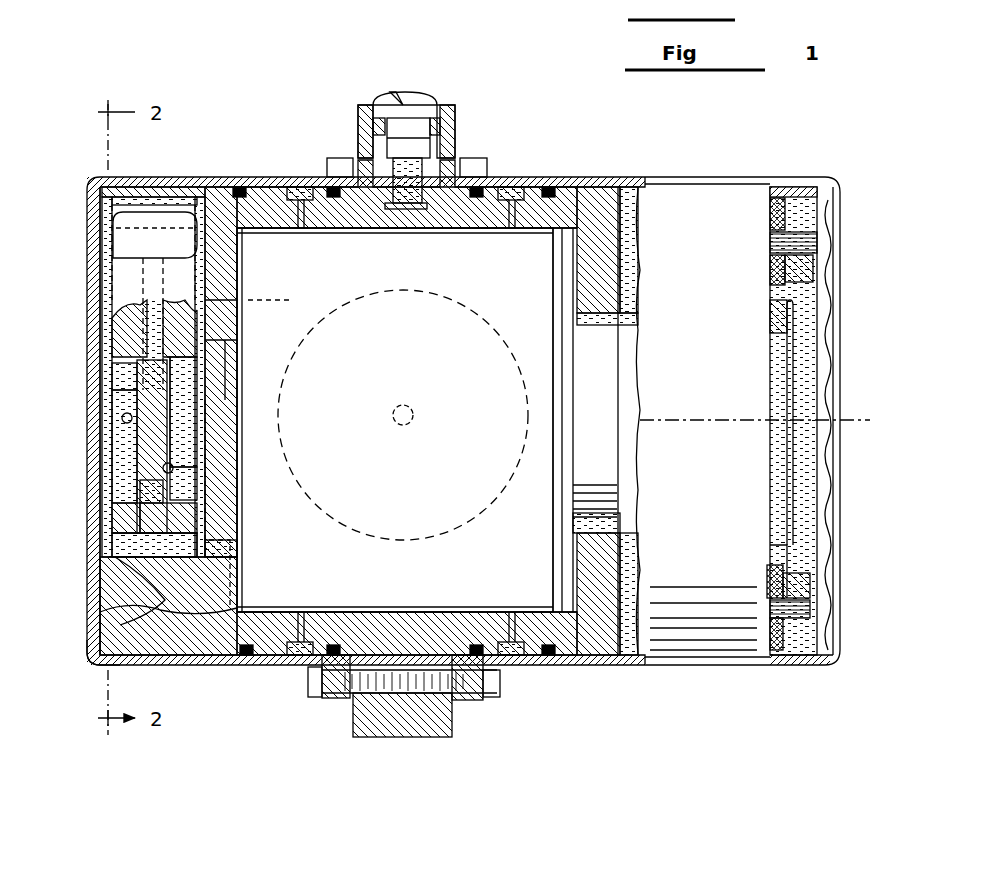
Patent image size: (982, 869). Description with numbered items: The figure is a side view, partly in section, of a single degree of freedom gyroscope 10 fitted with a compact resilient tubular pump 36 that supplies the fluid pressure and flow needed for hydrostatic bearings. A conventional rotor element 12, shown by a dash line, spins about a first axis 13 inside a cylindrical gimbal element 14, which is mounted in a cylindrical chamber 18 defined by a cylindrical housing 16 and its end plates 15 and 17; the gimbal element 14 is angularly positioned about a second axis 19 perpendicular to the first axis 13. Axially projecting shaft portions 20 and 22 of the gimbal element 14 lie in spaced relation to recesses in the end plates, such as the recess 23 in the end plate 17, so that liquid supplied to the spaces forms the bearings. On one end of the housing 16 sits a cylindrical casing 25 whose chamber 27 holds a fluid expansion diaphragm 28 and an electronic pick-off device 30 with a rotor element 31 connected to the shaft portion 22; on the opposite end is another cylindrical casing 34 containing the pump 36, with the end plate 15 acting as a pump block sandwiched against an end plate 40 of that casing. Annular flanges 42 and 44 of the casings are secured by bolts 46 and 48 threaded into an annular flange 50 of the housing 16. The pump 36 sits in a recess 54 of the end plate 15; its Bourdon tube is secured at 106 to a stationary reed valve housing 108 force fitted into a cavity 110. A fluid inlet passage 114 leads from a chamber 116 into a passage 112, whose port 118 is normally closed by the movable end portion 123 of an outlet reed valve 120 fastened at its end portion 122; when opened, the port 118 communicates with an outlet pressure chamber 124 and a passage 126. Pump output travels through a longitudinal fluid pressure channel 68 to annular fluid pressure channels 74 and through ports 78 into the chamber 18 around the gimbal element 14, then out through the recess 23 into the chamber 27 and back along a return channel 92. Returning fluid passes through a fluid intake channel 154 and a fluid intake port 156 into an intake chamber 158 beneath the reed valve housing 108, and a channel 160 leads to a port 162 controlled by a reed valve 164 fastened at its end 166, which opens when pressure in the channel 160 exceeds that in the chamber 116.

The single degree of freedom gyroscope 10 is at (579, 150).
The rotor element 12 is at (348, 300).
The first axis 13 is at (407, 402).
The cylindrical gimbal element 14 is at (447, 275).
The end plate 15 is at (100, 608).
The cylindrical housing 16 is at (262, 190).
The end plate 17 is at (600, 186).
The cylindrical chamber 18 is at (560, 630).
The second axis 19 is at (60, 417).
The shaft portion 20 is at (261, 445).
The shaft portion 22 is at (575, 340).
The recess 23 is at (630, 320).
The cylindrical casing 25 is at (786, 186).
The chamber 27 is at (812, 260).
The fluid expansion diaphragm 28 is at (822, 390).
The electronic pick-off device 30 is at (790, 220).
The rotor element 31 is at (795, 320).
The cylindrical casing 34 is at (160, 187).
The tubular pump 36 is at (96, 198).
The end plate 40 is at (110, 218).
The annular flange 42 is at (487, 178).
The annular flange 44 is at (340, 160).
The bolt 46 is at (497, 690).
The bolt 48 is at (318, 695).
The annular flange 50 is at (398, 738).
The recess 54 is at (176, 205).
The fluid pressure channel 68 is at (372, 216).
The annular fluid pressure channel 74 is at (300, 186).
The port 78 is at (302, 205).
The channel 92 is at (395, 622).
The securing point 106 is at (134, 235).
The stationary reed valve housing 108 is at (136, 318).
The cavity 110 is at (116, 372).
The passage 112 is at (238, 292).
The fluid inlet passage 114 is at (238, 329).
The chamber 116 is at (192, 395).
The port 118 is at (140, 395).
The outlet reed valve 120 is at (140, 507).
The end portion 122 is at (132, 521).
The end portion 123 is at (134, 376).
The outlet pressure chamber 124 is at (120, 452).
The passage 126 is at (124, 421).
The fluid intake channel 154 is at (245, 512).
The fluid intake port 156 is at (110, 615).
The intake chamber 158 is at (152, 580).
The channel 160 is at (150, 541).
The port 162 is at (190, 472).
The reed valve 164 is at (187, 432).
The end 166 is at (238, 356).